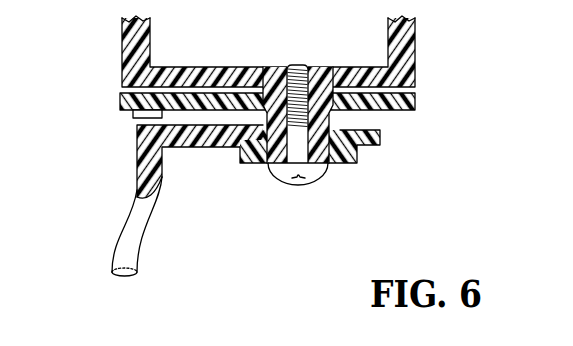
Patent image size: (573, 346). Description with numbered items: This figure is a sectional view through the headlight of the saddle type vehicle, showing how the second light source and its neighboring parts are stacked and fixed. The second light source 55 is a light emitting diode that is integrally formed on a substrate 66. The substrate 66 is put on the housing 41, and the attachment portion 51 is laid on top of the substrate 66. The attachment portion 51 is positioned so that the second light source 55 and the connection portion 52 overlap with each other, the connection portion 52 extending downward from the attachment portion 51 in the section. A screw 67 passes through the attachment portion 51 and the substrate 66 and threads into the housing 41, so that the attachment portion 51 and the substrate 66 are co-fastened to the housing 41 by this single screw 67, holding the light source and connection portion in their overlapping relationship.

The housing 41 is at (415, 52).
The substrate 66 is at (415, 103).
The second light source 55 is at (134, 114).
The connection portion 52 is at (125, 232).
The attachment portion 51 is at (253, 166).
The screw 67 is at (300, 186).